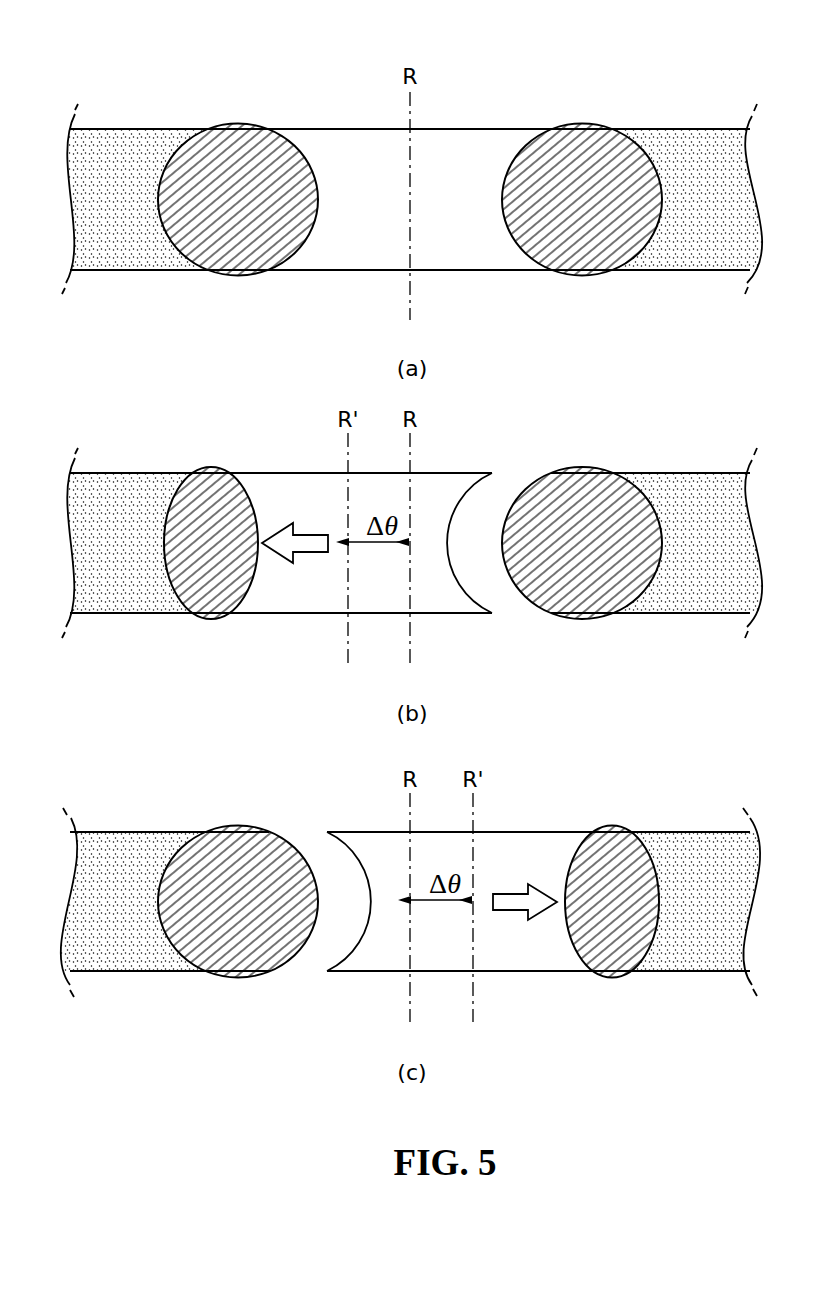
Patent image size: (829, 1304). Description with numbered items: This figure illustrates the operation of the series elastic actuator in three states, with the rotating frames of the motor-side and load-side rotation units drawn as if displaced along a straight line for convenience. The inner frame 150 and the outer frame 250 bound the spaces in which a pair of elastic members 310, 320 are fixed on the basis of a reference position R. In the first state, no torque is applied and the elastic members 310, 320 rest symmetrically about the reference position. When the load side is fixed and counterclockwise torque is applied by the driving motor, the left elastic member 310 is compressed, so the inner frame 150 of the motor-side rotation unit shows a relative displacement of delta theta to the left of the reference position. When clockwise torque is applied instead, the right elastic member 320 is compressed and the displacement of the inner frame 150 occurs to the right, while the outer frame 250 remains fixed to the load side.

The inner frame 150 is at (462, 247).
The outer frame 250 is at (123, 147).
The left elastic member 310 is at (237, 257).
The right elastic member 320 is at (585, 253).